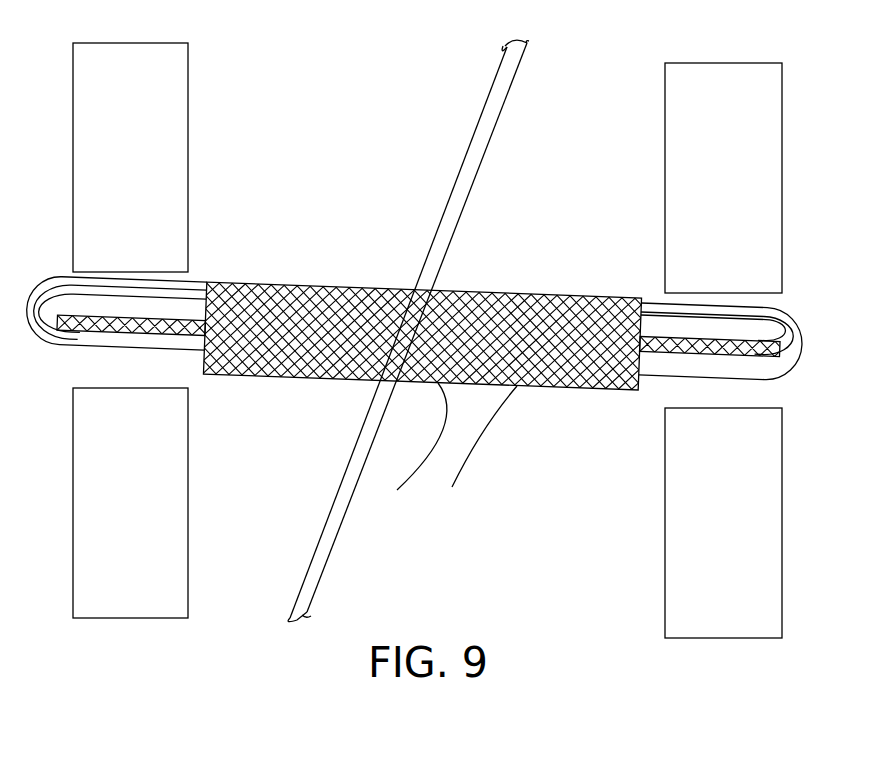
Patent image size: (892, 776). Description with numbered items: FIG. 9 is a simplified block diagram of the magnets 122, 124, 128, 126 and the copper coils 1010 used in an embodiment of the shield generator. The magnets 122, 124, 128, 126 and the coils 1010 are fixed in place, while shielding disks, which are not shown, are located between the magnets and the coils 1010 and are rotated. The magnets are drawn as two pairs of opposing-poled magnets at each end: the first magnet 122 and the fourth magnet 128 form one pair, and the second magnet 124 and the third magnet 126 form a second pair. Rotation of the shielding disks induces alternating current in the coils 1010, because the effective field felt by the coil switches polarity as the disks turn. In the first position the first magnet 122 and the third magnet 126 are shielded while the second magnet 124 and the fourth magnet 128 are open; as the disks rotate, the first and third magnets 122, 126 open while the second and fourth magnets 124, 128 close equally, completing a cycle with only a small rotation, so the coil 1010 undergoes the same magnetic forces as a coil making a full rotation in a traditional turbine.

The magnet I 122 is at (183, 157).
The magnet II 124 is at (673, 198).
The magnet III 126 is at (673, 560).
The magnet IV 128 is at (180, 510).
The copper coils 1010 is at (320, 270).